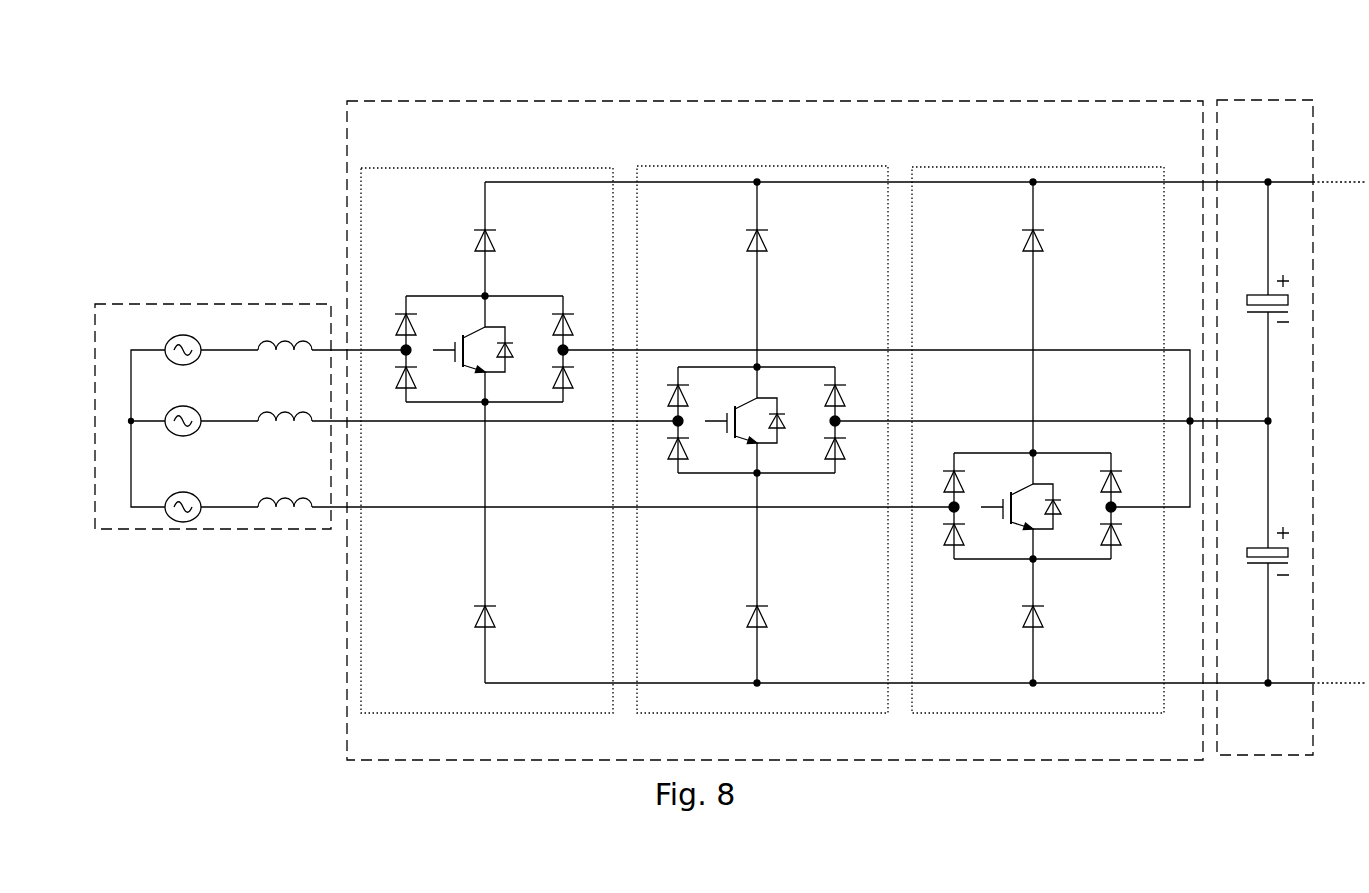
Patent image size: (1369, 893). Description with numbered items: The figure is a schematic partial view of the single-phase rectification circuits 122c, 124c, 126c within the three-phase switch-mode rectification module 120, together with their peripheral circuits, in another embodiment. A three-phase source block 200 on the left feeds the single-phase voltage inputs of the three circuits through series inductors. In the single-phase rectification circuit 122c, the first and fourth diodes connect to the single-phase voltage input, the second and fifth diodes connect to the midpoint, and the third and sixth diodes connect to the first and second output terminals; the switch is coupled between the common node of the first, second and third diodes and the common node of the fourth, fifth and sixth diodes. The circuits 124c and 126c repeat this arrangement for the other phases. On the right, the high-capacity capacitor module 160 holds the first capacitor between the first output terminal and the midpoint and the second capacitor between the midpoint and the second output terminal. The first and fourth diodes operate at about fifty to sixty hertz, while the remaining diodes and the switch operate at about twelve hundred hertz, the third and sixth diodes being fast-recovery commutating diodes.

The three-phase AC power source 200 is at (263, 303).
The three-phase switch-mode rectification module 120 is at (775, 397).
The single-phase rectification circuit 122c is at (465, 167).
The single-phase rectification circuit 124c is at (743, 167).
The single-phase rectification circuit 126c is at (1017, 167).
The high-capacity capacitor module 160 is at (1257, 100).